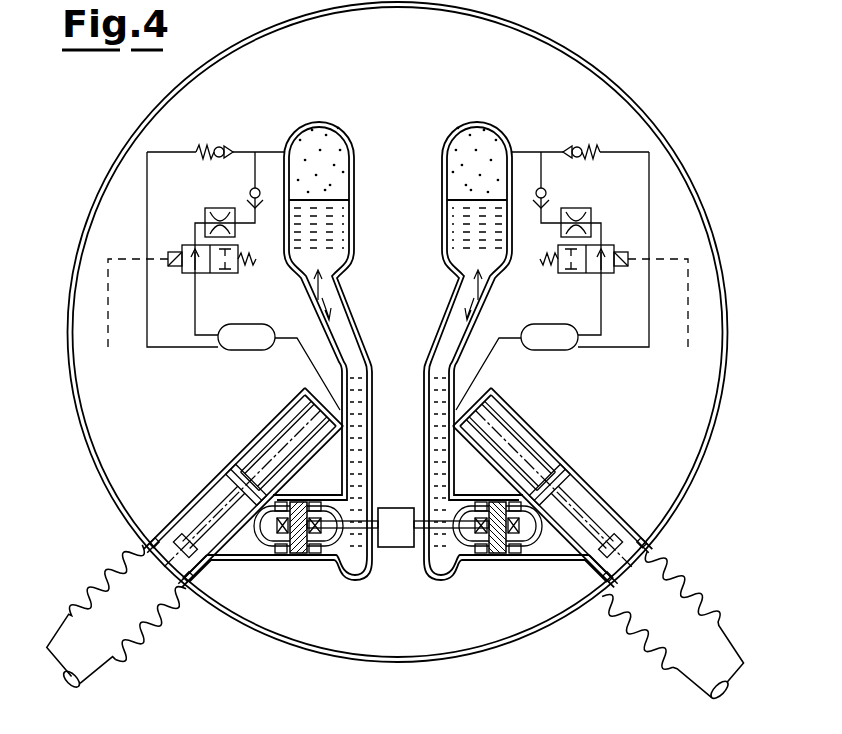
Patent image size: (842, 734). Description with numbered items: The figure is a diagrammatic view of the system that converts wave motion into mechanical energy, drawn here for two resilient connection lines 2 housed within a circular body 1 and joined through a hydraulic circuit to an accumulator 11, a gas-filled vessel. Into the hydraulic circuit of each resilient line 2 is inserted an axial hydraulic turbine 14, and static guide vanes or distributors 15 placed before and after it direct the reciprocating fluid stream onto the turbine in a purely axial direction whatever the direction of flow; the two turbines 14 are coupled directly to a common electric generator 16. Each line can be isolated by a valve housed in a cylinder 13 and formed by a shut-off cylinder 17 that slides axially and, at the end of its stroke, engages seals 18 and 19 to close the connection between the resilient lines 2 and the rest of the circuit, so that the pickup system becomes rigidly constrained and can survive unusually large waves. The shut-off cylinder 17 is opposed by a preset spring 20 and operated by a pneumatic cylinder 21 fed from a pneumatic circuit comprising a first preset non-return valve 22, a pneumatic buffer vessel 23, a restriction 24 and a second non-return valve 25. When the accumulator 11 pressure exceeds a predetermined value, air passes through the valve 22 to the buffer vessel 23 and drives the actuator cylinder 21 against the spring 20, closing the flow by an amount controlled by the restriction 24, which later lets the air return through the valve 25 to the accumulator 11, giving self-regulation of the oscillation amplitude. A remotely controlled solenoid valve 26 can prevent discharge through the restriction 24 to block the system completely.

The housing 1 is at (622, 88).
The resilient connection line 2 is at (82, 666).
The accumulator 11 is at (318, 121).
The cylinder 13 is at (202, 492).
The axial hydraulic turbine 14 is at (298, 540).
The static guide vanes 15 is at (278, 556).
The electric generator 16 is at (398, 548).
The shut-off cylinder 17 is at (287, 410).
The seal 18 is at (242, 452).
The seal 19 is at (180, 530).
The preset spring 20 is at (270, 424).
The pneumatic cylinder 21 is at (233, 464).
The first preset non-return valve 22 is at (203, 147).
The pneumatic buffer vessel 23 is at (238, 324).
The restriction 24 is at (213, 210).
The second non-return valve 25 is at (250, 190).
The remotely controlled solenoid valve 26 is at (175, 252).